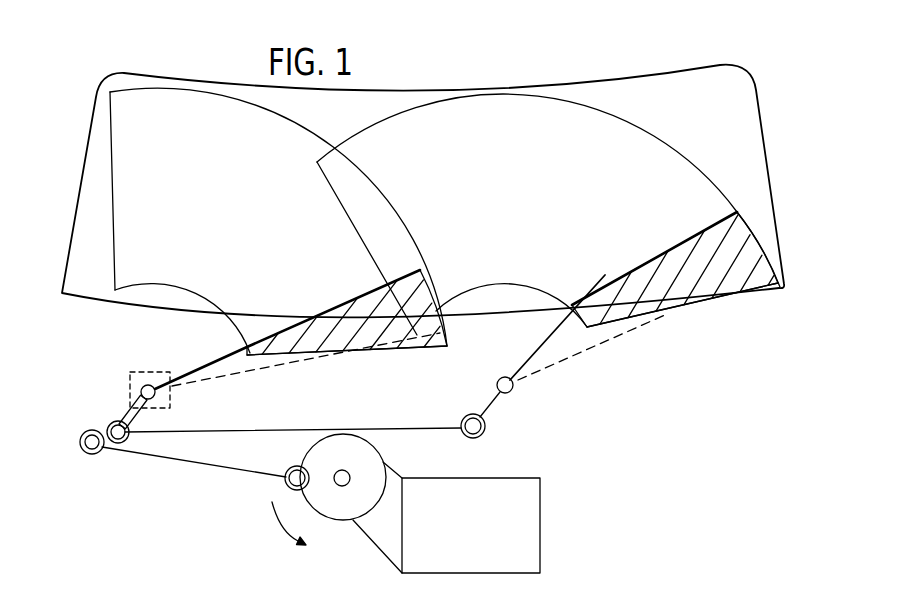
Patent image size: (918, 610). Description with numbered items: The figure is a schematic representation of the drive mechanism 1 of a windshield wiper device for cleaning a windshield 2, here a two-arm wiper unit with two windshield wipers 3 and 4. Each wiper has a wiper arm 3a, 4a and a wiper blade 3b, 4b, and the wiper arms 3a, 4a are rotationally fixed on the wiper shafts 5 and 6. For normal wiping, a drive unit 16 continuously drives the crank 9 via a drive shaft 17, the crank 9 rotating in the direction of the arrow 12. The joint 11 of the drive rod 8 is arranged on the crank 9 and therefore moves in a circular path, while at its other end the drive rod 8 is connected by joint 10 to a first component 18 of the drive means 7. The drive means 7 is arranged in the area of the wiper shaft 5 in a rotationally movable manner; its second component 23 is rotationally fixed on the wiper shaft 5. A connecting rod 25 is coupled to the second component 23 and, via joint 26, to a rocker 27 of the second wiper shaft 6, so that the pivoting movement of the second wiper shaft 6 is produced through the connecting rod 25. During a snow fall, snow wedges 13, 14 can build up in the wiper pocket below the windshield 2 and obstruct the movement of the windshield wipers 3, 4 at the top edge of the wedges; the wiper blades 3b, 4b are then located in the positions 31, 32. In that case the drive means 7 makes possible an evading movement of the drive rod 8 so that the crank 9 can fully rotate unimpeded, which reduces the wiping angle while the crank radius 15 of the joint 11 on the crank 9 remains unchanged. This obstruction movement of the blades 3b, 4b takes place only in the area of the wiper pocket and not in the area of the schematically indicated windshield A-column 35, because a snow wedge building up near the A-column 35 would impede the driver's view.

The drive mechanism 1 is at (310, 426).
The windshield 2 is at (435, 117).
The windshield wiper 3 is at (278, 241).
The wiper arm 3a is at (192, 371).
The wiper blade 3b is at (331, 303).
The windshield wiper 4 is at (607, 288).
The wiper arm 4a is at (550, 343).
The wiper blade 4b is at (686, 240).
The wiper shaft 5 is at (146, 384).
The wiper shaft 6 is at (514, 389).
The drive means 7 is at (126, 377).
The drive rod 8 is at (205, 464).
The crank 9 is at (366, 446).
The joint 10 is at (88, 455).
The joint 11 is at (297, 466).
The arrow 12 is at (281, 536).
The snow wedge 13 is at (366, 346).
The snow wedge 14 is at (710, 288).
The crank radius 15 is at (343, 521).
The drive unit 16 is at (540, 517).
The drive shaft 17 is at (350, 478).
The first component 18 is at (126, 417).
The second component 23 is at (143, 441).
The connecting rod 25 is at (243, 433).
The joint 26 is at (486, 426).
The rocker 27 is at (491, 402).
The position 31 is at (429, 265).
The position 32 is at (737, 192).
The windshield A-column 35 is at (77, 188).